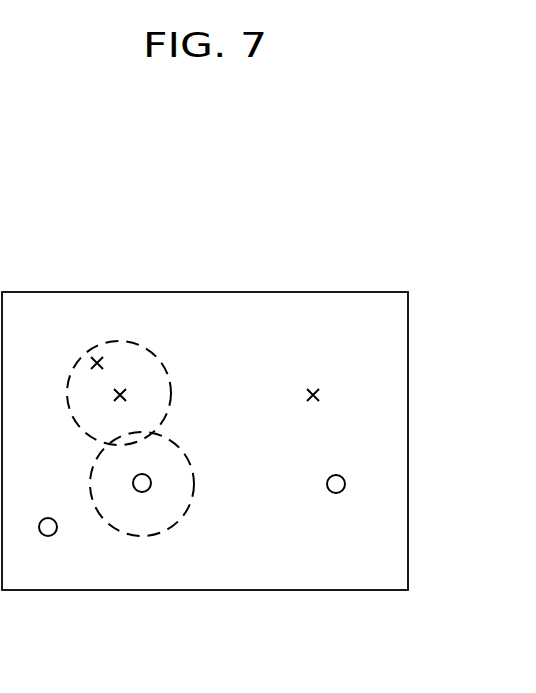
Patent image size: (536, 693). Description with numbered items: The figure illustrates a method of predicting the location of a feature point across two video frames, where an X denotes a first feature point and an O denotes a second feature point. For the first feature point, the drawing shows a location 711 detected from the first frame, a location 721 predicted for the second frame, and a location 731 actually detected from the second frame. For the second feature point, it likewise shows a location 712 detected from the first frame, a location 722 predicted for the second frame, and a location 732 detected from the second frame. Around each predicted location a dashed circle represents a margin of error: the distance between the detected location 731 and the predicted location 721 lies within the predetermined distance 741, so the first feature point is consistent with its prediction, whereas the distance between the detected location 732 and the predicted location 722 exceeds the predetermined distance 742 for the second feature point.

The location detected from the first frame 711 is at (320, 395).
The location detected from the first frame 712 is at (345, 484).
The location predicted from the second frame 721 is at (121, 392).
The location predicted from the second frame 722 is at (142, 492).
The location detected from the second frame 731 is at (97, 360).
The location detected from the second frame 732 is at (48, 536).
The predetermined distance 741 is at (157, 357).
The predetermined distance 742 is at (174, 526).